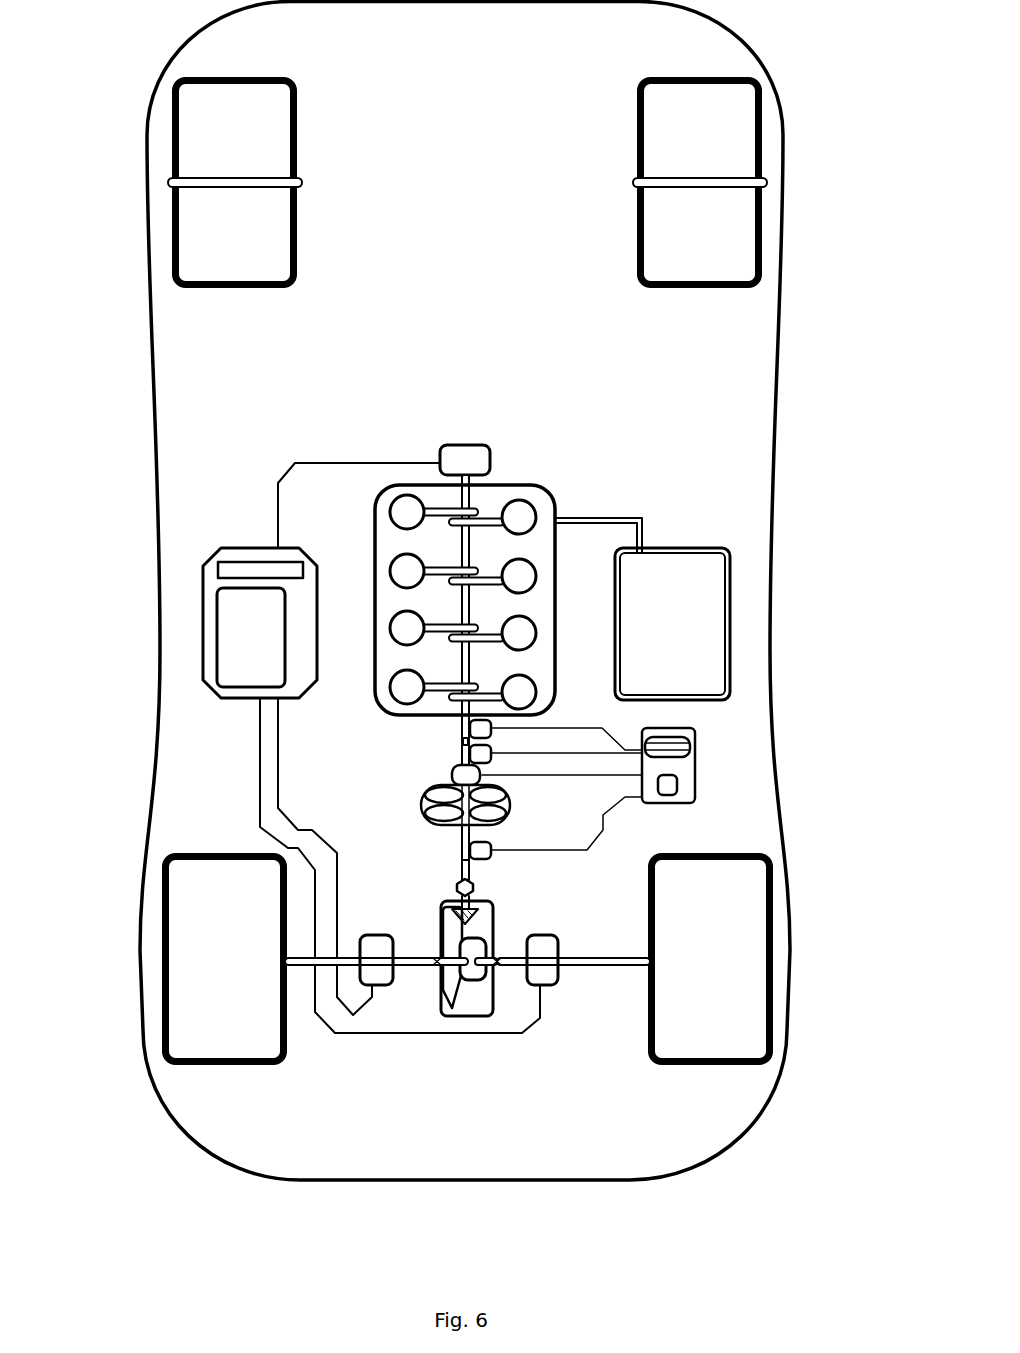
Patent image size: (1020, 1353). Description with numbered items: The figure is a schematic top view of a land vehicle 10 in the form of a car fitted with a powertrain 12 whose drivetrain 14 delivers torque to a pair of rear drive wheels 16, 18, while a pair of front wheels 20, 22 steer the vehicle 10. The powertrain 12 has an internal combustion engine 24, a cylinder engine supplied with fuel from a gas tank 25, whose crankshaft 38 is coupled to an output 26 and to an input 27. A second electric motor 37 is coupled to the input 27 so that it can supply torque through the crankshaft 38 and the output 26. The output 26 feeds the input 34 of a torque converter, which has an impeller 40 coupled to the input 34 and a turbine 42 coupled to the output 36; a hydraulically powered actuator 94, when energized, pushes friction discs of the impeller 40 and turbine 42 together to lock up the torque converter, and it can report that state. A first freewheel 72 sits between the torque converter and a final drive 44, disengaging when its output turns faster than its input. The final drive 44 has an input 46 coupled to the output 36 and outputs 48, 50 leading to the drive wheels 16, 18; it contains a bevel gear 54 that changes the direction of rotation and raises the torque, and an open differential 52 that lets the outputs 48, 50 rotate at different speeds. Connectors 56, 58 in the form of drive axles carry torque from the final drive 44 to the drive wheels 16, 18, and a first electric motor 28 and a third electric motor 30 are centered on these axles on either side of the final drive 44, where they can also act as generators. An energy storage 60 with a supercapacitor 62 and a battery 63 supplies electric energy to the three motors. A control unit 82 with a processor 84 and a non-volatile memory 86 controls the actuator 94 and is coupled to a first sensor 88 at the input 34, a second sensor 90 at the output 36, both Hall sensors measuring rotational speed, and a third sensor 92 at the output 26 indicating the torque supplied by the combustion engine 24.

The land vehicle 10 is at (808, 516).
The powertrain 12 is at (520, 410).
The drivetrain 14 is at (507, 1089).
The rear drive wheel 16 is at (162, 990).
The rear drive wheel 18 is at (773, 990).
The front wheel 20 is at (172, 150).
The front wheel 22 is at (762, 150).
The internal combustion engine 24 is at (543, 484).
The gas tank 25 is at (730, 617).
The output of the combustion engine 26 is at (462, 722).
The input of the combustion engine 27 is at (458, 478).
The first electric motor 28 is at (375, 1000).
The third electric motor 30 is at (555, 986).
The input of the torque converter 34 is at (462, 741).
The output of the torque converter 36 is at (462, 870).
The second electric motor 37 is at (455, 445).
The crankshaft 38 is at (460, 548).
The impeller 40 is at (425, 795).
The turbine 42 is at (425, 812).
The final drive 44 is at (464, 1023).
The input of the final drive 46 is at (476, 912).
The output of the final drive 48 is at (432, 975).
The output of the final drive 50 is at (496, 965).
The open differential 52 is at (482, 945).
The bevel gear 54 is at (450, 935).
The connector 56 is at (345, 1025).
The connector 58 is at (588, 966).
The energy storage 60 is at (203, 633).
The supercapacitor 62 is at (215, 663).
The battery 63 is at (213, 570).
The first freewheel 72 is at (474, 887).
The control unit 82 is at (695, 770).
The processor 84 is at (677, 785).
The non-volatile memory 86 is at (690, 745).
The first sensor 88 is at (470, 753).
The second sensor 90 is at (470, 850).
The third sensor 92 is at (491, 727).
The hydraulically powered actuator 94 is at (452, 775).